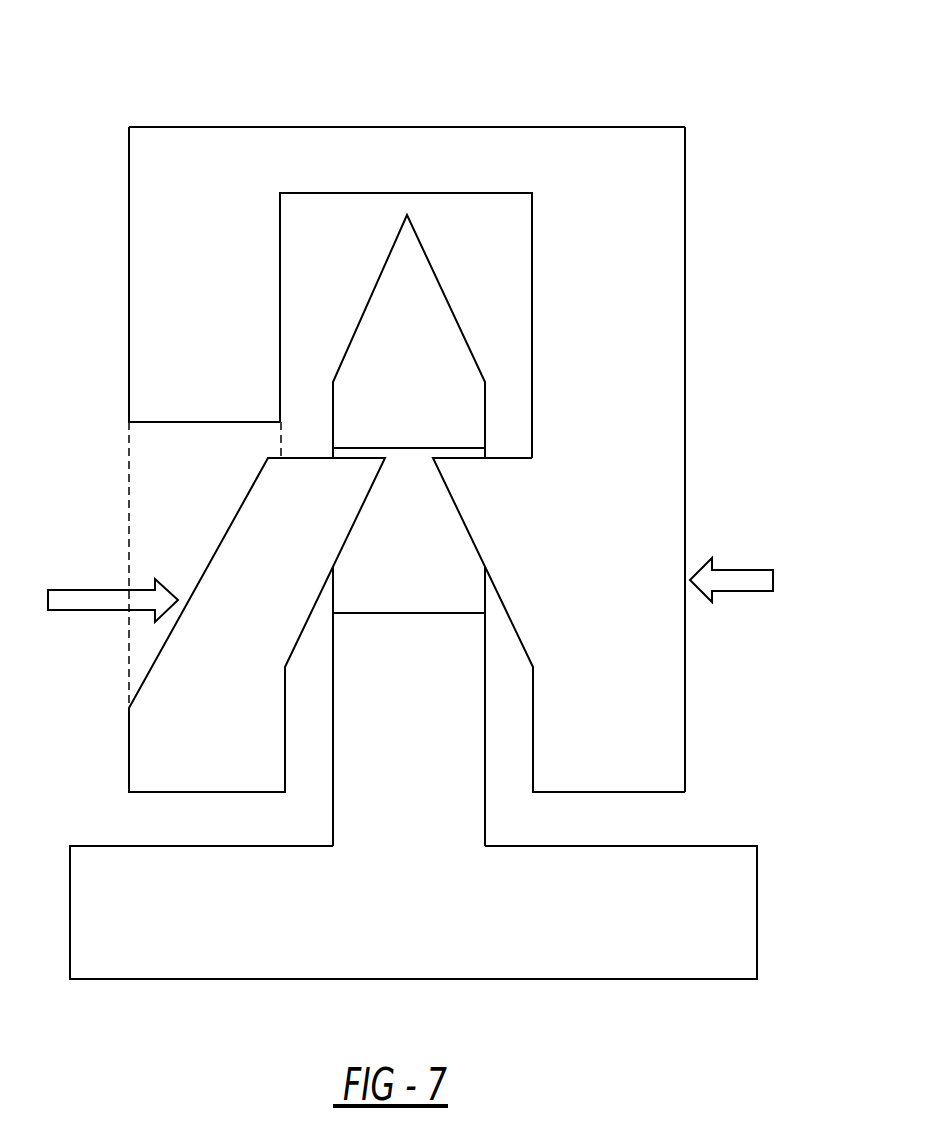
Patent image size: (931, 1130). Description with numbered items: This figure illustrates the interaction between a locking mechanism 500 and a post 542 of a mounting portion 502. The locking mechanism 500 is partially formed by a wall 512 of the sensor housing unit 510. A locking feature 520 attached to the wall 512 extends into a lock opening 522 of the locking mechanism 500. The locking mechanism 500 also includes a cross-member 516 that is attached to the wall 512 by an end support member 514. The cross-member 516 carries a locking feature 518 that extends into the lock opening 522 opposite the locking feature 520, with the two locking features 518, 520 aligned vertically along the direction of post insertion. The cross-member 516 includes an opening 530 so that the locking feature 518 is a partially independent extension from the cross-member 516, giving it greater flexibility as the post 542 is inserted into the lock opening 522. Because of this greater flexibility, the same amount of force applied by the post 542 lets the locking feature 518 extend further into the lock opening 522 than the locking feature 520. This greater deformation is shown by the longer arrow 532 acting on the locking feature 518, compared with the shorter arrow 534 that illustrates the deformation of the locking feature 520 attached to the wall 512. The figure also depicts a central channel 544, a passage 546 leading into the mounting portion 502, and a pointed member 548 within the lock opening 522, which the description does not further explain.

The locking mechanism 500 is at (628, 95).
The mounting portion 502 is at (633, 942).
The sensor housing unit 510 is at (666, 127).
The wall 512 is at (638, 300).
The end support member 514 is at (435, 157).
The cross-member 516 is at (152, 332).
The locking feature 518 is at (307, 497).
The locking feature 520 is at (480, 475).
The lock opening 522 is at (316, 243).
The opening 530 is at (195, 455).
The arrow 532 is at (100, 615).
The arrow 534 is at (743, 568).
The post 542 is at (400, 752).
The central channel 544 is at (432, 587).
The outlet passage 546 is at (387, 683).
The punch 548 is at (398, 296).